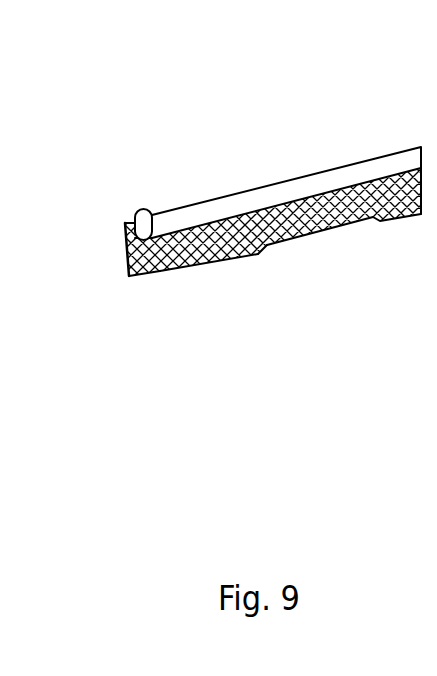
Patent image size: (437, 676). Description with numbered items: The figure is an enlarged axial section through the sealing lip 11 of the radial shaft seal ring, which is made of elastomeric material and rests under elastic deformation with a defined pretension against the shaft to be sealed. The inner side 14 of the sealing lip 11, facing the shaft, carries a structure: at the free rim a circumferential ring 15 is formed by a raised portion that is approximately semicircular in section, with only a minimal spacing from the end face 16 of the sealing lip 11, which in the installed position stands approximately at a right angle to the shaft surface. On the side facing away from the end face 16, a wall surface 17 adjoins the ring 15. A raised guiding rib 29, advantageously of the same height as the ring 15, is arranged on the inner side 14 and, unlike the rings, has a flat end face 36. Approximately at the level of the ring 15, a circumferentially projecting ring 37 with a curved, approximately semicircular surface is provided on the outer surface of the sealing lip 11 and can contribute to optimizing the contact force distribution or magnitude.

The sealing lip 11 is at (353, 160).
The inner side 14 is at (322, 233).
The circumferential ring 15 is at (157, 277).
The end face 16 is at (125, 262).
The wall surface 17 is at (187, 266).
The guiding rib 29 is at (228, 252).
The flat end face 36 is at (250, 255).
The circumferentially projecting ring 37 is at (143, 218).